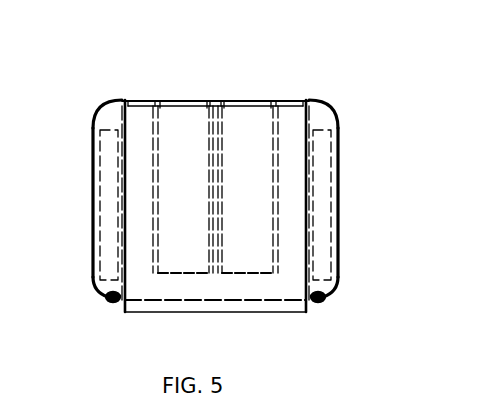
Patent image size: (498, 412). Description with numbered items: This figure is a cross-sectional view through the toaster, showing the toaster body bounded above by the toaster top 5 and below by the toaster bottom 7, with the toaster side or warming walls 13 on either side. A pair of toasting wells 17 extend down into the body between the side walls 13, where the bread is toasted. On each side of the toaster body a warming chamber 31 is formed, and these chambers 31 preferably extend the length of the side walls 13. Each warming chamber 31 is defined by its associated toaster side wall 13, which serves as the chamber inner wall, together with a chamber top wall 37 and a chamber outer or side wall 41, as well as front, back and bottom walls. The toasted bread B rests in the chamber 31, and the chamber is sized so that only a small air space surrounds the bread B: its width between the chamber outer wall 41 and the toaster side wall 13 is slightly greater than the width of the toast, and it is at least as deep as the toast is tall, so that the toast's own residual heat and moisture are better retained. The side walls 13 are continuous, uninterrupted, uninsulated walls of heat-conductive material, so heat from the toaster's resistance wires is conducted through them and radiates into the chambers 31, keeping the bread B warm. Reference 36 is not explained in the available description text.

The toaster top 5 is at (285, 100).
The toaster bottom 7 is at (192, 303).
The toaster side walls 13 is at (117, 116).
The toasting wells 17 is at (183, 165).
The warming chambers 31 is at (107, 120).
The solder/weld bead 36 is at (100, 295).
The chamber top wall 37 is at (107, 118).
The chamber outer wall 41 is at (93, 233).
The toasted bread B is at (95, 270).